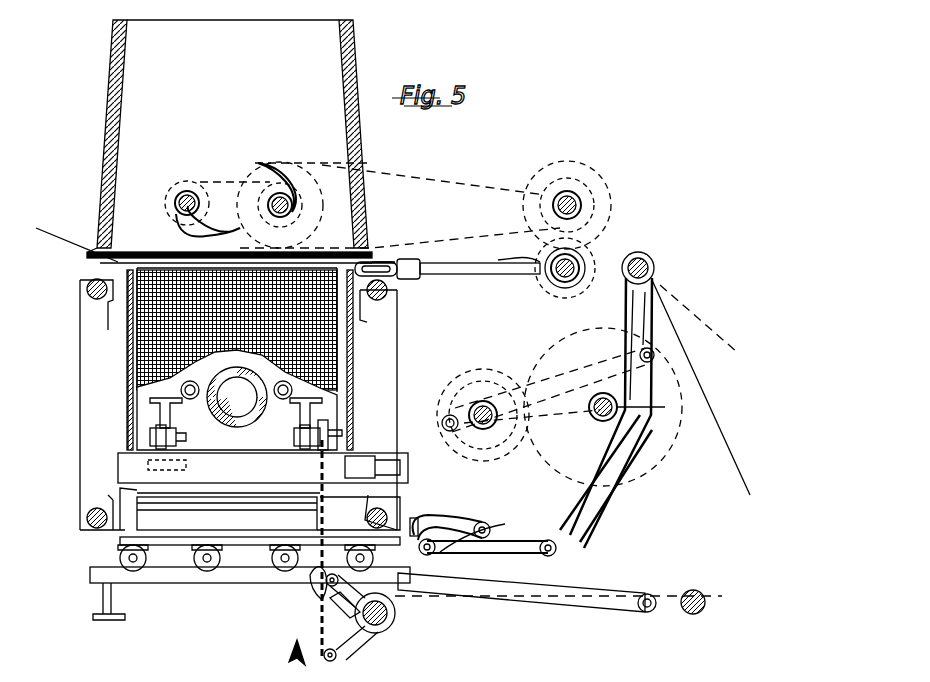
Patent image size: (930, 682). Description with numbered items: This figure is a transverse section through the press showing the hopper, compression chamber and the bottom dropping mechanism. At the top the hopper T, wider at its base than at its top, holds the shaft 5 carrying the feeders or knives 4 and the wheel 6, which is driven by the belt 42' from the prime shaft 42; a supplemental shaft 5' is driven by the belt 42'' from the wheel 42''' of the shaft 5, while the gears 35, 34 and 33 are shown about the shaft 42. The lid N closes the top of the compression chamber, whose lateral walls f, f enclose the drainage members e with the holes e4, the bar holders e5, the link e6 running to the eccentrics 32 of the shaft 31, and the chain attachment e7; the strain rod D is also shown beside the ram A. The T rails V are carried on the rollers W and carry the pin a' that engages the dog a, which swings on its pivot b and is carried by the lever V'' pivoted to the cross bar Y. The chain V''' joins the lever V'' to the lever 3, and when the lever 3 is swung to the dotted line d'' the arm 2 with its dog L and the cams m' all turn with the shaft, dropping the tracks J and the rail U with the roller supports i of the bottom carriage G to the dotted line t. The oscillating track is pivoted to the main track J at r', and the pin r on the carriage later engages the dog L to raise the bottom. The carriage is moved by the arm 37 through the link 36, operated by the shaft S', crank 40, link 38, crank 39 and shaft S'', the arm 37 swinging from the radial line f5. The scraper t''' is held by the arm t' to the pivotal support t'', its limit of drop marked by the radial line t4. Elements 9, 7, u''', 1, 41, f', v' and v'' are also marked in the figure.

The hopper T is at (355, 54).
The lid N is at (92, 252).
The supplemental shaft 5' is at (187, 176).
The belt 42'' is at (235, 170).
The feeders or knives 4 is at (185, 231).
The wheel 6 is at (283, 172).
The shaft 5 is at (286, 205).
The wheel 42''' is at (313, 176).
The belt 42' is at (400, 199).
The lateral walls f is at (230, 400).
The hatched post 9 is at (165, 390).
The strain rod D is at (395, 292).
The ram A is at (237, 400).
The T rail V is at (236, 413).
The roller W is at (295, 442).
The cross bar Y is at (263, 468).
The dog a is at (265, 462).
The pivot b is at (330, 440).
The chain V''' is at (260, 509).
The pin r is at (259, 580).
The track J is at (162, 590).
The bottom G is at (116, 537).
The rail U is at (78, 570).
The roller supports i is at (112, 583).
The wheel 7 is at (288, 572).
The dotted line t is at (443, 615).
The dog L is at (318, 583).
The arm 2 is at (340, 605).
The lever 3 is at (376, 640).
The link u''' is at (350, 674).
The rod 1 is at (395, 615).
The dotted line d'' is at (433, 649).
The drainage members e is at (380, 252).
The holes e4 is at (380, 262).
The link e6 is at (468, 262).
The bar holder e5 is at (515, 280).
The chain attachment e7 is at (402, 282).
The prime shaft 42 is at (588, 168).
The gear 35 is at (608, 186).
The gear 34 is at (598, 228).
The eccentrics 32 is at (545, 282).
The shaft 31 is at (557, 292).
The pivot shaft 33 is at (650, 260).
The shaft S'' is at (701, 377).
The crank 39 is at (628, 314).
The pin 41 is at (655, 365).
The link 38 is at (565, 425).
The radial line f5 is at (540, 470).
The link f' is at (702, 443).
The shaft S' is at (542, 398).
The pin a' is at (377, 412).
The lever V'' is at (435, 439).
The crank 40 is at (478, 430).
The arm 37 is at (578, 525).
The link 36 is at (492, 550).
The arm t' is at (447, 513).
The pivotal support t'' is at (499, 519).
The radial line t4 is at (510, 523).
The scraper t''' is at (427, 510).
The pivot r' is at (430, 569).
The cams m' is at (558, 607).
The bar v' is at (521, 608).
The pivot v'' is at (647, 621).